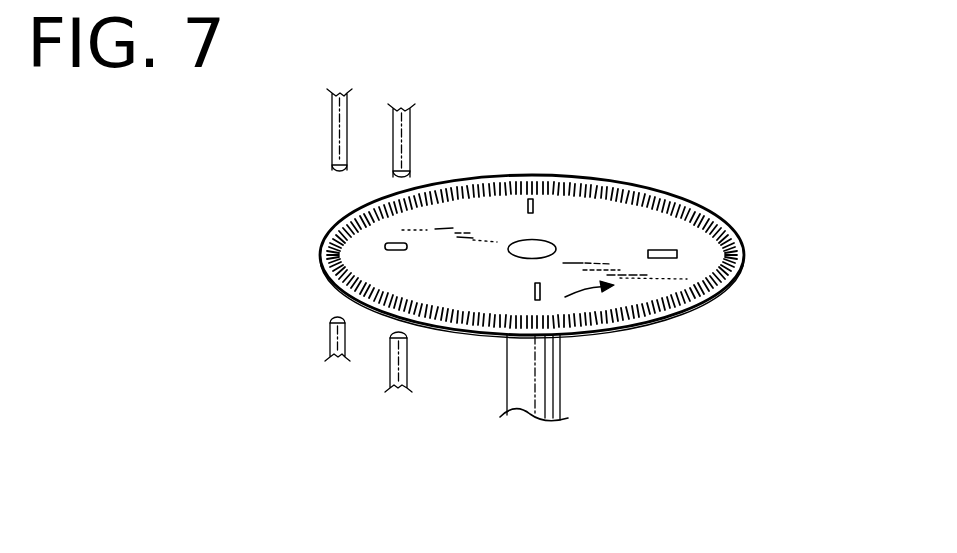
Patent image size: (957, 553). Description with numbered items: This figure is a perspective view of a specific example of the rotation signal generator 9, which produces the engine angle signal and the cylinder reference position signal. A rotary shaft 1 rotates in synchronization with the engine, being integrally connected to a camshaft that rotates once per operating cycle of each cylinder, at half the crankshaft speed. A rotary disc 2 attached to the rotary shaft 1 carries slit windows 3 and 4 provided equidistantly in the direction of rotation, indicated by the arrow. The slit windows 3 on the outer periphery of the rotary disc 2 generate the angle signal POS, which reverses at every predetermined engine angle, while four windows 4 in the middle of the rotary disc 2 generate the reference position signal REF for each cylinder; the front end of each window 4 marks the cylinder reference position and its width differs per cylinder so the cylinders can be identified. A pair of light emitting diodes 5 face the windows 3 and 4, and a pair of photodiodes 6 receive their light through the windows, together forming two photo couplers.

The rotary shaft 1 is at (562, 397).
The rotary disc 2 is at (717, 218).
The slit windows 3 is at (720, 283).
The windows 4 is at (648, 253).
The light emitting diodes 5 is at (347, 122).
The photodiodes 6 is at (390, 367).
The rotation signal generator 9 is at (568, 294).